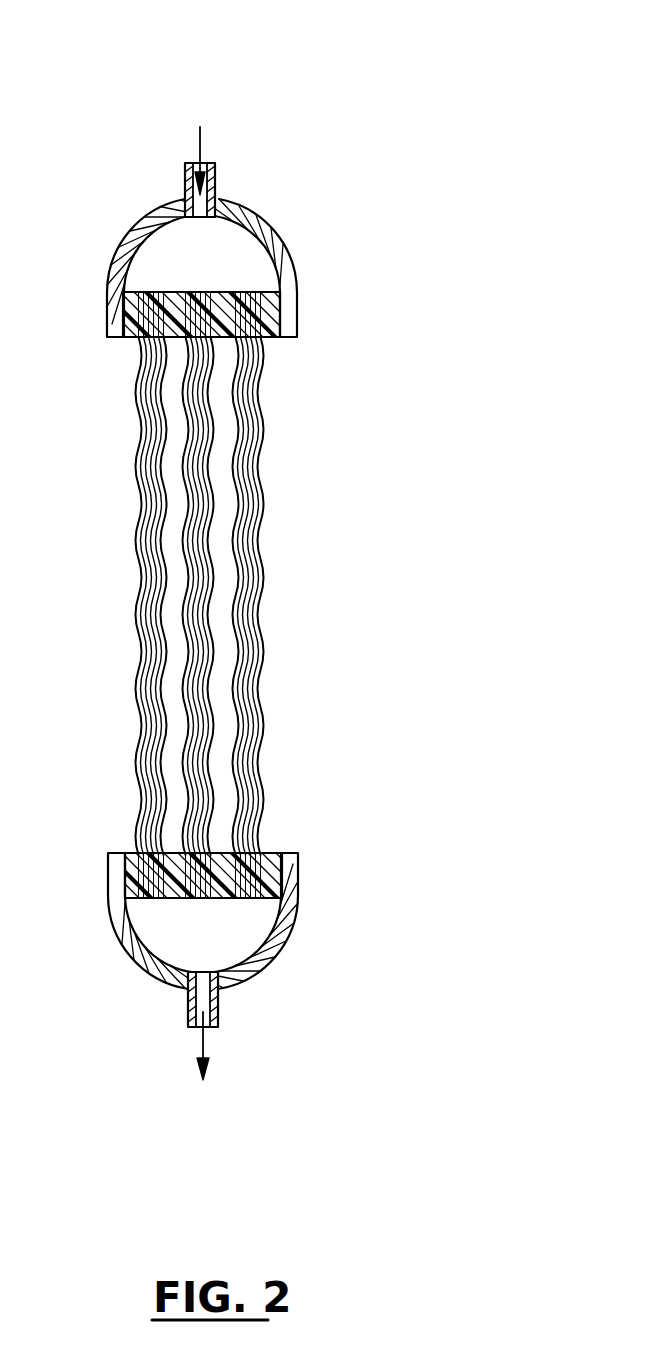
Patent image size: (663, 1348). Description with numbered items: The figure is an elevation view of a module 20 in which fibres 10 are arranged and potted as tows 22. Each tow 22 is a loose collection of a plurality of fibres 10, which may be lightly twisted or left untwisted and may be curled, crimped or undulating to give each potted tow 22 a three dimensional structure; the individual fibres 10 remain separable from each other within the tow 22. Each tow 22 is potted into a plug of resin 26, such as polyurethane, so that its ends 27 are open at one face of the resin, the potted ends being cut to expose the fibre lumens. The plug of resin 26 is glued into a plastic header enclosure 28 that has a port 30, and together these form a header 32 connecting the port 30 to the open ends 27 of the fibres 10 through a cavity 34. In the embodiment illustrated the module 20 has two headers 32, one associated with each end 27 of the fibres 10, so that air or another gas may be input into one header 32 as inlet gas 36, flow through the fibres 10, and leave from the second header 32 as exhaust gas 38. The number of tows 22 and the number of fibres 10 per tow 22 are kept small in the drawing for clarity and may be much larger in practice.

The fibres 10 is at (260, 450).
The module 20 is at (279, 74).
The tows 22 is at (278, 561).
The plug of resin 26 is at (270, 856).
The ends 27 is at (153, 292).
The header enclosure 28 is at (288, 232).
The port 30 is at (215, 188).
The header 32 is at (408, 264).
The cavity 34 is at (220, 270).
The inlet gas 36 is at (198, 135).
The exhaust gas 38 is at (200, 1040).